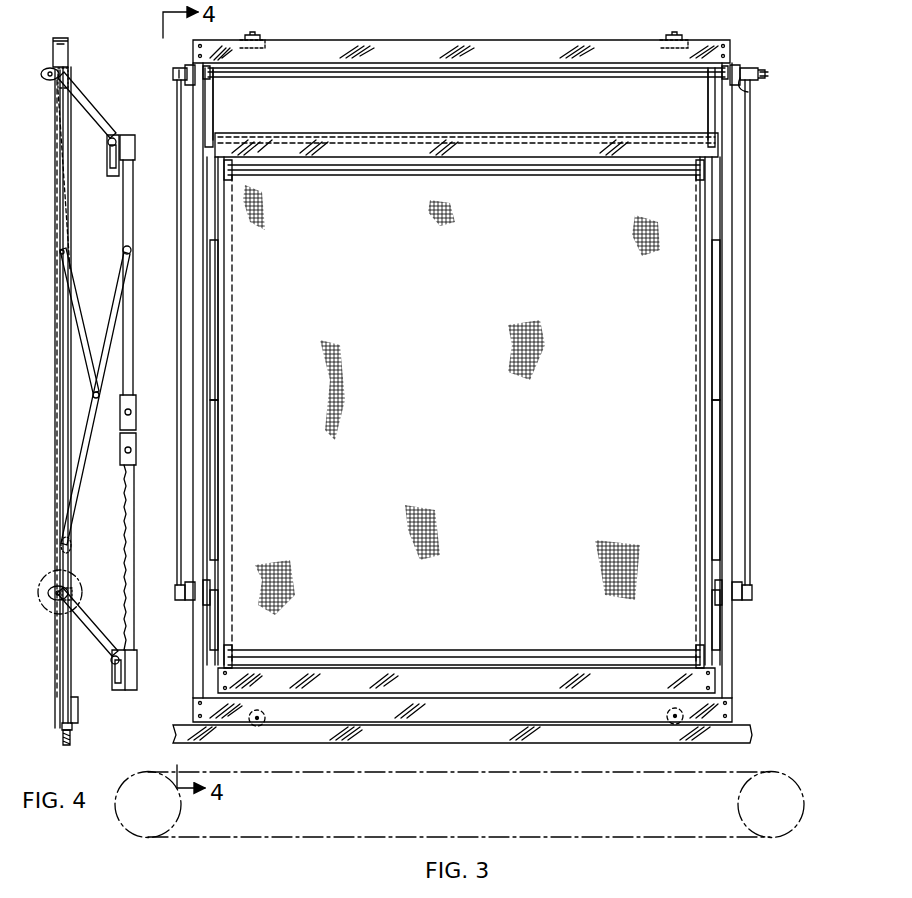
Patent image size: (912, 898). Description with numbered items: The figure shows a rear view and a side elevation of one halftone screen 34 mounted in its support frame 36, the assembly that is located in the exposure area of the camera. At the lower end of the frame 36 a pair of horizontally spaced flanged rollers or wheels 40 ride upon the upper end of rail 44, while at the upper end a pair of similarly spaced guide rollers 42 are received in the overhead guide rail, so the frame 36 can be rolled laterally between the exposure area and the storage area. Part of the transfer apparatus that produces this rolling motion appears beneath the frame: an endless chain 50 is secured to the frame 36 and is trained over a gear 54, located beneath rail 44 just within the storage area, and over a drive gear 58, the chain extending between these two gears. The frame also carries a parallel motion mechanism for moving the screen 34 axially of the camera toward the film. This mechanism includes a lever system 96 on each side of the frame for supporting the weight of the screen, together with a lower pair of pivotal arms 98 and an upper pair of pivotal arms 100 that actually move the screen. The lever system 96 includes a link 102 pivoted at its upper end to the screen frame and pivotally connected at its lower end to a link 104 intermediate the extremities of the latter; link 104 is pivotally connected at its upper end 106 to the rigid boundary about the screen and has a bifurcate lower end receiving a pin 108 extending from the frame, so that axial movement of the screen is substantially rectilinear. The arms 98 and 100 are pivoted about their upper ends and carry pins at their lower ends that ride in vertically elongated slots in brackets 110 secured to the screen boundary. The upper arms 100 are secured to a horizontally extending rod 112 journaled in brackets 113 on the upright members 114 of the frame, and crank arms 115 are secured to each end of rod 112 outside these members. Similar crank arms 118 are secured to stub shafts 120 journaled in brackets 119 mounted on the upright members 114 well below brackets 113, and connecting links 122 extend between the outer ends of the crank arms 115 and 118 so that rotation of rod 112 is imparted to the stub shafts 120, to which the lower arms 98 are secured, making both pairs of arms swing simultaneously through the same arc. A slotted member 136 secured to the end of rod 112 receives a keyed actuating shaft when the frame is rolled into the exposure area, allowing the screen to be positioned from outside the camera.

In FIG. 3, the halftone screen 34 is at (446, 427).
In FIG. 4, the frame 36 is at (60, 655).
In FIG. 3, the frame 36 is at (185, 672).
In FIG. 3, the flanged rollers or wheels 40 is at (258, 727).
In FIG. 3, the guide rollers 42 is at (262, 36).
In FIG. 4, the rail 44 is at (72, 740).
In FIG. 3, the rail 44 is at (482, 742).
In FIG. 3, the endless drive member 50 is at (440, 830).
In FIG. 3, the gear 54 is at (770, 760).
In FIG. 3, the drive gear 58 is at (182, 800).
In FIG. 4, the lever system 96 is at (94, 276).
In FIG. 4, the lower pivotal arms 98 is at (88, 622).
In FIG. 3, the lower pivotal arms 98 is at (215, 625).
In FIG. 4, the upper pivotal arms 100 is at (100, 115).
In FIG. 3, the upper pivotal arms 100 is at (212, 110).
In FIG. 4, the link 102 is at (86, 325).
In FIG. 3, the link 102 is at (218, 370).
In FIG. 4, the link 104 is at (86, 468).
In FIG. 3, the link 104 is at (218, 520).
In FIG. 4, the upper end of link 104 106 is at (132, 252).
In FIG. 4, the pin 108 is at (72, 543).
In FIG. 4, the brackets 110 is at (108, 172).
In FIG. 3, the rod 112 is at (292, 78).
In FIG. 4, the brackets 113 is at (66, 76).
In FIG. 3, the brackets 113 is at (188, 70).
In FIG. 4, the upright members 114 is at (72, 648).
In FIG. 3, the upright members 114 is at (185, 178).
In FIG. 4, the crank arms 115 is at (50, 68).
In FIG. 3, the crank arms 115 is at (178, 82).
In FIG. 4, the crank arms 118 is at (57, 600).
In FIG. 3, the crank arms 118 is at (180, 590).
In FIG. 4, the brackets 119 is at (66, 585).
In FIG. 3, the brackets 119 is at (188, 580).
In FIG. 3, the stub shafts 120 is at (178, 600).
In FIG. 4, the connecting links 122 is at (60, 370).
In FIG. 3, the connecting links 122 is at (182, 330).
In FIG. 3, the slotted member 136 is at (760, 70).